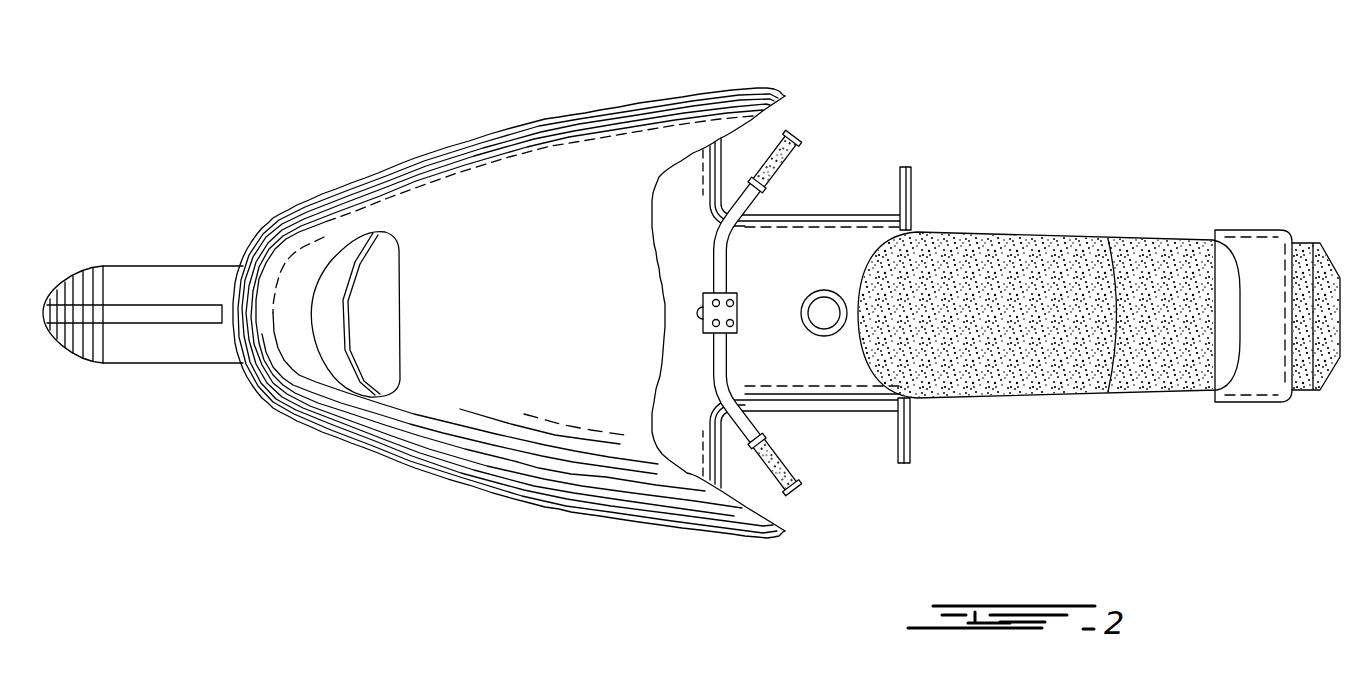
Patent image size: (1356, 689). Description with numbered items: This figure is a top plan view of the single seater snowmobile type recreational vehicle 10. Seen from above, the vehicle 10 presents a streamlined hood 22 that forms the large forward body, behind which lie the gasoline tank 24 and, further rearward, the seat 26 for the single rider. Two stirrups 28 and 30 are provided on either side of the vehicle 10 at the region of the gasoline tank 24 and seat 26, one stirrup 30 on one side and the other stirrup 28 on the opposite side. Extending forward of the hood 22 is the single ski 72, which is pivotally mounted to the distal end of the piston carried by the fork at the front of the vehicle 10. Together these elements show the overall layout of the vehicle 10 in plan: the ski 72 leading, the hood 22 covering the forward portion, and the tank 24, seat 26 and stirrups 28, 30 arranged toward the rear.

The recreational vehicle 10 is at (350, 110).
The streamlined hood 22 is at (560, 152).
The gasoline tank 24 is at (806, 247).
The seat 26 is at (1008, 273).
The stirrup 28 is at (910, 447).
The stirrup 30 is at (908, 187).
The single ski 72 is at (158, 287).